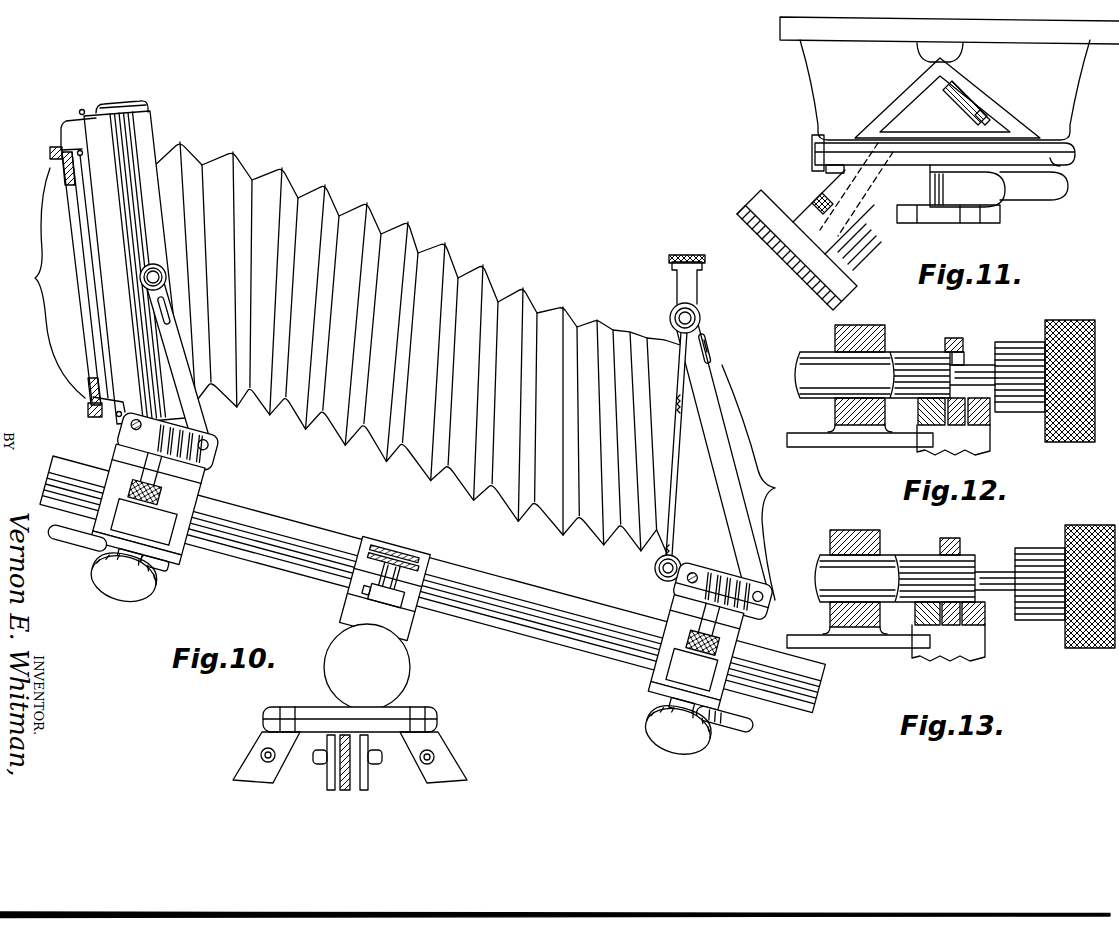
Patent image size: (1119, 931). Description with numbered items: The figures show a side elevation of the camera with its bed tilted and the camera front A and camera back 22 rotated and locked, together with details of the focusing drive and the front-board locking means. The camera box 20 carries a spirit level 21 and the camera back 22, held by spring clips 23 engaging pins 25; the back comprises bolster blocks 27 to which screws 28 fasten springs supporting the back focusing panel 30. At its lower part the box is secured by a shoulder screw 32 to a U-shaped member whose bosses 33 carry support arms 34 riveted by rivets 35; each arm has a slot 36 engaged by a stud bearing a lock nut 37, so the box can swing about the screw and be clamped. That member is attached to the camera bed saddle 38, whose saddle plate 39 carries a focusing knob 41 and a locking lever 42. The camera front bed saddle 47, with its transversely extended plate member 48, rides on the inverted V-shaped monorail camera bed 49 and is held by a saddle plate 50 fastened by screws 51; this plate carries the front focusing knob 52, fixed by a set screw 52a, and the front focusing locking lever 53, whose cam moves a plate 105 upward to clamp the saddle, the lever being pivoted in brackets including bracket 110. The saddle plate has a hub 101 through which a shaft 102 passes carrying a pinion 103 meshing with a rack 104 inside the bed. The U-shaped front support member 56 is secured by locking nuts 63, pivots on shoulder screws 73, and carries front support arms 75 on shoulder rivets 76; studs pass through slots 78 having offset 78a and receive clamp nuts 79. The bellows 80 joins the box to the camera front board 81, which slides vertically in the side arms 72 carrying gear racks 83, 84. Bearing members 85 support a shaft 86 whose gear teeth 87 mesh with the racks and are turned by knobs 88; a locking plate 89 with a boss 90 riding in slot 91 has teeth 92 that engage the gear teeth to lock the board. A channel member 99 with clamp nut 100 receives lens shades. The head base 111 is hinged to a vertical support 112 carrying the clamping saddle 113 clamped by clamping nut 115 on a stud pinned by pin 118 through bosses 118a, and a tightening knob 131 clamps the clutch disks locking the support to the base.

In FIG. 10, the camera box 20 is at (150, 129).
In FIG. 10, the spirit level 21 is at (122, 106).
In FIG. 10, the camera back 22 is at (45, 283).
In FIG. 10, the spring clips 23 is at (70, 116).
In FIG. 10, the pins 25 is at (81, 109).
In FIG. 10, the bolster blocks 27 is at (72, 128).
In FIG. 10, the screws 28 is at (48, 158).
In FIG. 10, the back focusing panel 30 is at (78, 266).
In FIG. 10, the shoulder screw 32 is at (136, 428).
In FIG. 10, the boss 33 is at (206, 450).
In FIG. 10, the support arms 34 is at (176, 352).
In FIG. 10, the rivets 35 is at (210, 442).
In FIG. 10, the slot 36 is at (168, 306).
In FIG. 10, the lock nut 37 is at (158, 266).
In FIG. 10, the camera bed saddle 38 is at (186, 490).
In FIG. 10, the saddle plate 39 is at (175, 541).
In FIG. 10, the focusing knob 41 is at (146, 592).
In FIG. 10, the locking lever 42 is at (74, 548).
In FIG. 10, the camera front bed saddle 47 is at (730, 657).
In FIG. 11, the camera front bed saddle 47 is at (815, 70).
In FIG. 10, the transversely extended plate member 48 is at (742, 637).
In FIG. 11, the transversely extended plate member 48 is at (780, 25).
In FIG. 10, the camera bed 49 is at (322, 530).
In FIG. 11, the camera bed 49 is at (990, 108).
In FIG. 10, the saddle plate 50 is at (726, 700).
In FIG. 11, the saddle plate 50 is at (1062, 158).
In FIG. 11, the screws 51 is at (838, 173).
In FIG. 10, the front focusing knob 52 is at (646, 728).
In FIG. 11, the front focusing knob 52 is at (752, 231).
In FIG. 11, the set screw 52a is at (814, 198).
In FIG. 10, the front focusing locking lever 53 is at (742, 728).
In FIG. 11, the front focusing locking lever 53 is at (1012, 200).
In FIG. 10, the U-shaped front support member 56 is at (706, 576).
In FIG. 10, the locking nuts 63 is at (694, 650).
In FIG. 10, the side arms 72 is at (696, 543).
In FIG. 12, the side arms 72 is at (990, 450).
In FIG. 13, the side arms 72 is at (985, 655).
In FIG. 10, the shoulder screw 73 is at (684, 585).
In FIG. 10, the front support arm 75 is at (714, 386).
In FIG. 10, the shoulder rivet 76 is at (764, 597).
In FIG. 10, the slot 78 is at (706, 366).
In FIG. 10, the offset 78a is at (708, 350).
In FIG. 10, the clamp nuts 79 is at (699, 319).
In FIG. 10, the bellows 80 is at (412, 232).
In FIG. 12, the camera front board 81 is at (850, 440).
In FIG. 13, the camera front board 81 is at (880, 646).
In FIG. 10, the gear rack 83 is at (676, 404).
In FIG. 12, the gear rack 84 is at (988, 418).
In FIG. 13, the gear rack 84 is at (985, 618).
In FIG. 12, the bearing members 85 is at (835, 334).
In FIG. 13, the bearing members 85 is at (858, 533).
In FIG. 12, the shaft 86 is at (822, 398).
In FIG. 12, the gear teeth 87 is at (908, 355).
In FIG. 13, the gear teeth 87 is at (912, 558).
In FIG. 10, the knobs 88 is at (655, 566).
In FIG. 12, the knobs 88 is at (1068, 320).
In FIG. 13, the knobs 88 is at (1092, 526).
In FIG. 12, the locking plate 89 is at (953, 338).
In FIG. 13, the locking plate 89 is at (953, 538).
In FIG. 12, the boss 90 is at (940, 421).
In FIG. 13, the boss 90 is at (942, 624).
In FIG. 12, the slot 91 is at (968, 421).
In FIG. 13, the slot 91 is at (968, 624).
In FIG. 12, the teeth 92 is at (962, 358).
In FIG. 10, the channel member 99 is at (698, 276).
In FIG. 10, the clamp nut 100 is at (690, 252).
In FIG. 10, the hub 101 is at (143, 548).
In FIG. 11, the hub 101 is at (866, 228).
In FIG. 11, the shaft 102 is at (882, 186).
In FIG. 11, the pinion 103 is at (945, 98).
In FIG. 11, the rack 104 is at (976, 118).
In FIG. 11, the plate 105 is at (1005, 178).
In FIG. 11, the bracket 110 is at (926, 215).
In FIG. 10, the head base 111 is at (437, 712).
In FIG. 10, the vertical support 112 is at (410, 627).
In FIG. 10, the clamping saddle 113 is at (425, 555).
In FIG. 10, the clamping nut 115 is at (395, 552).
In FIG. 10, the pin 118 is at (372, 608).
In FIG. 10, the bosses 118a is at (360, 604).
In FIG. 10, the tightening knob 131 is at (407, 672).
In FIG. 10, the camera front A is at (754, 482).